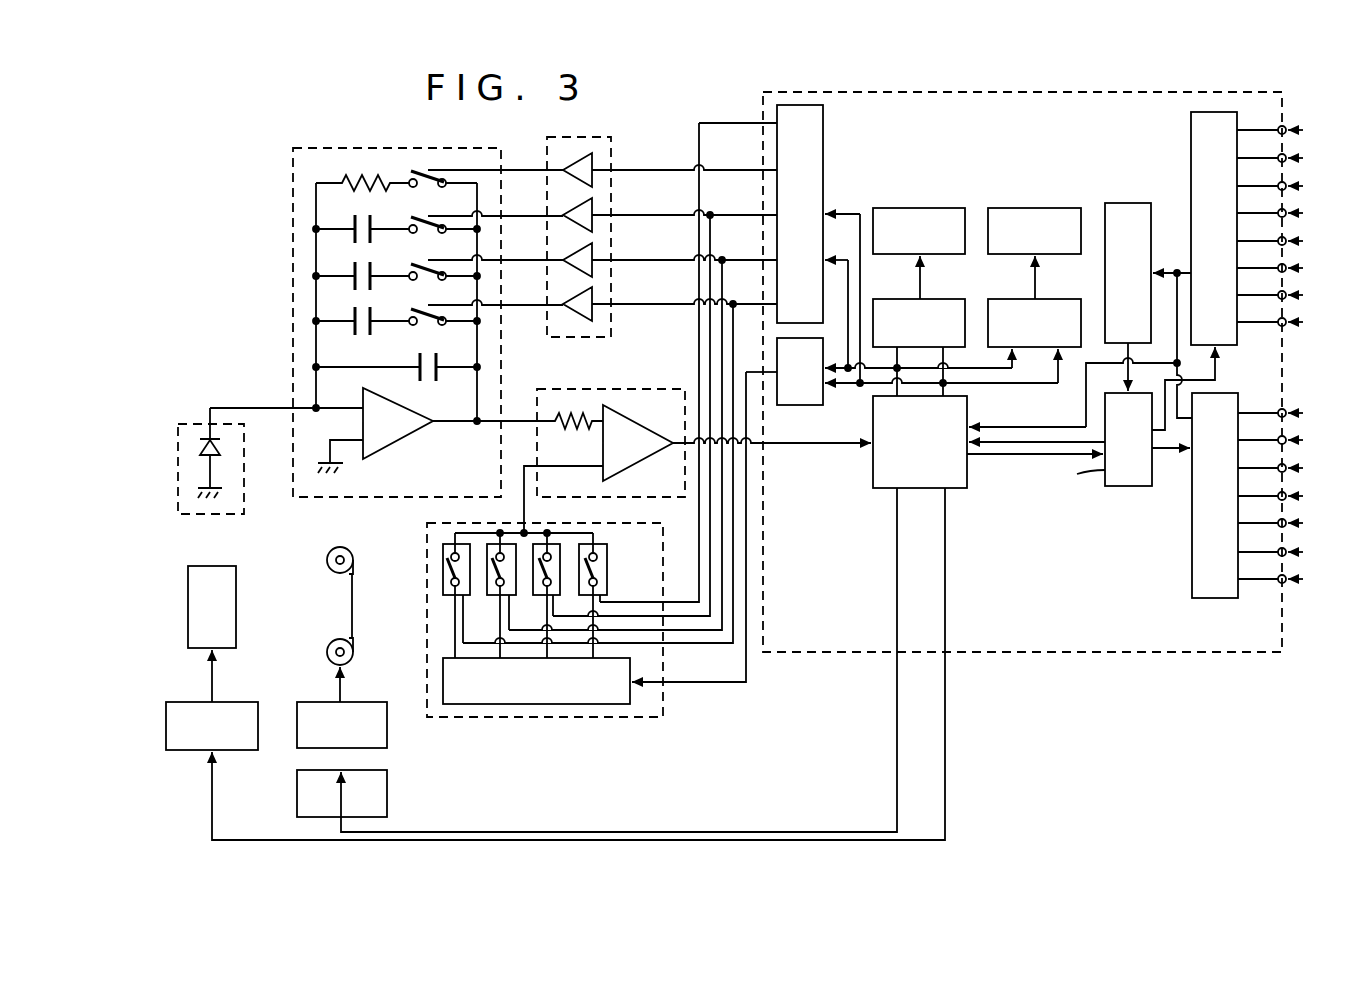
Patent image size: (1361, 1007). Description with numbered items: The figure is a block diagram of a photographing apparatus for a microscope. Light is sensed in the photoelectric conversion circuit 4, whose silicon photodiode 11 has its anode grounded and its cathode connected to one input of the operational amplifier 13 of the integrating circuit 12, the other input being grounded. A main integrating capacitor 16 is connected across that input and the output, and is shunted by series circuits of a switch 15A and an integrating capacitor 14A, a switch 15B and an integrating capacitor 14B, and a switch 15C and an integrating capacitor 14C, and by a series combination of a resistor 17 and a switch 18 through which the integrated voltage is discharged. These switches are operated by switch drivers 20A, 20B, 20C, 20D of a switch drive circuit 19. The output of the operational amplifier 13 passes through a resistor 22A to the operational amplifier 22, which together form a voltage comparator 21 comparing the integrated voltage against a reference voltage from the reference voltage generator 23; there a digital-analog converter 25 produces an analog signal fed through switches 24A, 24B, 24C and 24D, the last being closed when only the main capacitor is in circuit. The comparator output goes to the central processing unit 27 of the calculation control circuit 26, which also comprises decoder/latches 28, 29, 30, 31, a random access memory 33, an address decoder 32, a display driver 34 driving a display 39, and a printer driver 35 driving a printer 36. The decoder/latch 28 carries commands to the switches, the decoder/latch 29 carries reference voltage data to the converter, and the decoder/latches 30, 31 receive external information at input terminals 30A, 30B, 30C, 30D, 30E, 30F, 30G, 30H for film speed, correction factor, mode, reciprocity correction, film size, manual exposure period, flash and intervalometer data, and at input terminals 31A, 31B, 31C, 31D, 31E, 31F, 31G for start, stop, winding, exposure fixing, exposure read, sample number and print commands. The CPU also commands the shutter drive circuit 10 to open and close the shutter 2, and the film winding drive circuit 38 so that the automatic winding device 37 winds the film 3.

The shutter 2 is at (236, 608).
The film 3 is at (352, 604).
The photoelectric conversion circuit 4 is at (244, 482).
The shutter drive circuit 10 is at (238, 747).
The silicon photodiode 11 is at (216, 452).
The integrating circuit 12 is at (291, 212).
The operational amplifier 13 is at (380, 452).
The integrating capacitor 14A is at (360, 324).
The integrating capacitor 14B is at (360, 279).
The integrating capacitor 14C is at (360, 232).
The switch 15A is at (424, 327).
The switch 15B is at (424, 282).
The switch 15C is at (424, 236).
The main integrating capacitor 16 is at (430, 382).
The resistor 17 is at (350, 183).
The switch 18 is at (418, 184).
The switch drive circuit 19 is at (541, 160).
The switch driver 20A is at (596, 294).
The switch driver 20B is at (596, 248).
The switch driver 20C is at (596, 203).
The switch driver 20D is at (596, 158).
The voltage comparator 21 is at (601, 389).
The operational amplifier 22 is at (634, 430).
The resistor 22A is at (574, 425).
The reference voltage generator 23 is at (602, 719).
The switch 24A is at (443, 572).
The switch 24B is at (494, 597).
The switch 24C is at (540, 597).
The switch 24D is at (607, 572).
The digital-analog converter 25 is at (524, 705).
The calculation control circuit 26 is at (1060, 653).
The central processing unit 27 is at (952, 478).
The decoder/latch 28 is at (814, 152).
The decoder/latch 29 is at (817, 392).
The decoder/latch 30 is at (1191, 148).
The input terminal 30A is at (1279, 128).
The input terminal 30B is at (1279, 156).
The input terminal 30C is at (1279, 184).
The input terminal 30D is at (1279, 211).
The input terminal 30E is at (1279, 239).
The input terminal 30F is at (1279, 266).
The input terminal 30G is at (1279, 293).
The input terminal 30H is at (1279, 320).
The decoder/latch 31 is at (1192, 570).
The input terminal 31A is at (1279, 411).
The input terminal 31B is at (1279, 438).
The input terminal 31C is at (1279, 466).
The input terminal 31D is at (1279, 494).
The input terminal 31E is at (1279, 521).
The input terminal 31F is at (1279, 550).
The input terminal 31G is at (1279, 577).
The address decoder 32 is at (1120, 488).
The random access memory 33 is at (1122, 212).
The display driver 34 is at (946, 314).
The printer driver 35 is at (1060, 314).
The printer 36 is at (1032, 210).
The automatic winding device 37 is at (387, 737).
The film winding drive circuit 38 is at (384, 798).
The display 39 is at (920, 210).